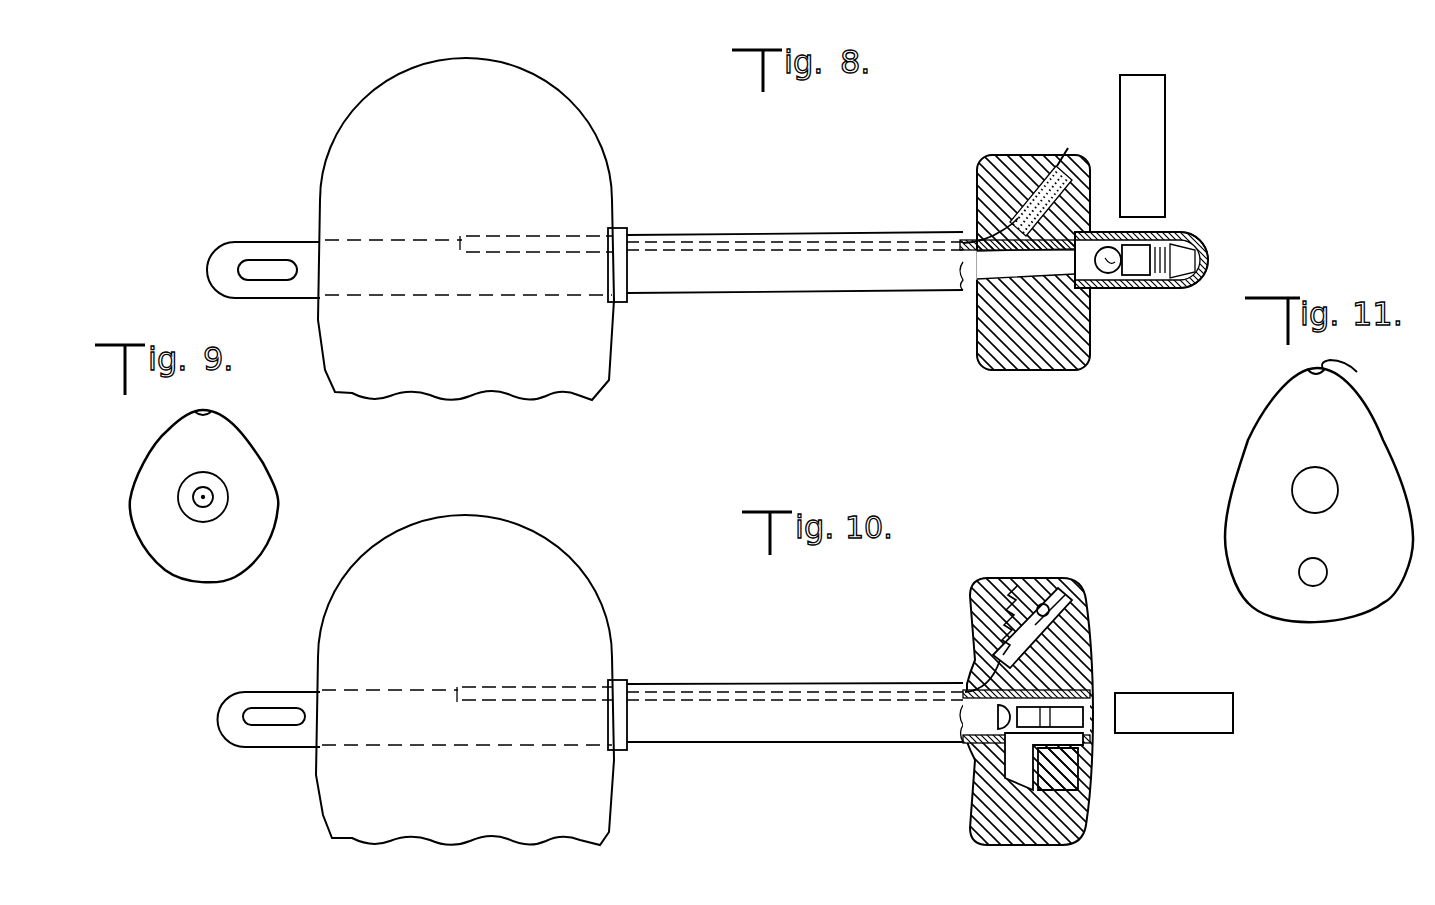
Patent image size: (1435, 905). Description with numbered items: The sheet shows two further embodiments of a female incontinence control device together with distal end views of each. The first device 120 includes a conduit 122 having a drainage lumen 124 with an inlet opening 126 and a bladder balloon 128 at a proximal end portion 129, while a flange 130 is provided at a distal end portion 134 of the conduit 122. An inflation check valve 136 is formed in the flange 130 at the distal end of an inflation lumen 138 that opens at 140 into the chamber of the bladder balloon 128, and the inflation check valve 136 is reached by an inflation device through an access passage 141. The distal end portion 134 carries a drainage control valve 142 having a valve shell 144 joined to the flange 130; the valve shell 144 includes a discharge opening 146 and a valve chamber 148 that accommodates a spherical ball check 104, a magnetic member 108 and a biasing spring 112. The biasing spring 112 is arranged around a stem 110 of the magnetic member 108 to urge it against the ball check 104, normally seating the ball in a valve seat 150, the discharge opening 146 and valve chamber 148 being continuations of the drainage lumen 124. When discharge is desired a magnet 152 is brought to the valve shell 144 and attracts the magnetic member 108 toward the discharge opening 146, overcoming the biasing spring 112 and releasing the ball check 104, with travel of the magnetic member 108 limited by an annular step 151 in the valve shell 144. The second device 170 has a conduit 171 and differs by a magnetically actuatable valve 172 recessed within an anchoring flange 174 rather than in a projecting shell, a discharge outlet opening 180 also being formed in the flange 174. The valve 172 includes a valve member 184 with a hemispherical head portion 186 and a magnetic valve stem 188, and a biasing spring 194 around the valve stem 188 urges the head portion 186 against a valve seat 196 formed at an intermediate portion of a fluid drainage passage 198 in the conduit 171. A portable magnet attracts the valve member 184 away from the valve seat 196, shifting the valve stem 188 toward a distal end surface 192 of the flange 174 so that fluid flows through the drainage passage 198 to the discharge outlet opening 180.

In FIG. 8, the spherical ball check 104 is at (1082, 306).
In FIG. 8, the magnetic member 108 is at (1160, 240).
In FIG. 8, the stem 110 is at (1163, 245).
In FIG. 8, the biasing spring 112 is at (1200, 276).
In FIG. 8, the female incontinence control device 120 is at (783, 186).
In FIG. 9, the female incontinence control device 120 is at (287, 486).
In FIG. 8, the conduit 122 is at (785, 238).
In FIG. 8, the drainage lumen 124 is at (708, 248).
In FIG. 8, the inlet opening 126 is at (266, 262).
In FIG. 10, the inlet opening 126 is at (268, 727).
In FIG. 8, the bladder balloon 128 is at (372, 95).
In FIG. 10, the bladder balloon 128 is at (566, 550).
In FIG. 8, the proximal end portion 129 is at (205, 252).
In FIG. 8, the flange 130 is at (1008, 155).
In FIG. 9, the flange 130 is at (246, 436).
In FIG. 8, the distal end portion 134 is at (1078, 372).
In FIG. 8, the inflation check valve 136 is at (1038, 170).
In FIG. 10, the inflation check valve 136 is at (1070, 622).
In FIG. 8, the inflation lumen 138 is at (968, 233).
In FIG. 8, the opening of inflation lumen 140 is at (460, 243).
In FIG. 10, the opening of inflation lumen 140 is at (460, 690).
In FIG. 8, the access passage 141 is at (1062, 160).
In FIG. 9, the access passage 141 is at (210, 409).
In FIG. 11, the access passage 141 is at (1357, 370).
In FIG. 10, the access passage 141 is at (1052, 584).
In FIG. 8, the drainage control valve 142 is at (1112, 290).
In FIG. 9, the drainage control valve 142 is at (230, 498).
In FIG. 8, the valve shell 144 is at (1150, 292).
In FIG. 9, the valve shell 144 is at (224, 513).
In FIG. 8, the discharge opening 146 is at (1202, 262).
In FIG. 9, the discharge opening 146 is at (198, 503).
In FIG. 8, the valve chamber 148 is at (1135, 292).
In FIG. 8, the valve seat 150 is at (1100, 240).
In FIG. 8, the annular step 151 is at (1165, 290).
In FIG. 8, the magnet 152 is at (1165, 117).
In FIG. 11, the female incontinence control device 170 is at (1243, 436).
In FIG. 10, the female incontinence control device 170 is at (790, 660).
In FIG. 10, the conduit 171 is at (840, 684).
In FIG. 10, the magnetically actuatable valve 172 is at (1090, 786).
In FIG. 11, the anchoring flange 174 is at (1380, 435).
In FIG. 10, the anchoring flange 174 is at (1004, 578).
In FIG. 11, the discharge outlet opening 180 is at (1308, 578).
In FIG. 10, the discharge outlet opening 180 is at (1086, 812).
In FIG. 10, the valve member 184 is at (1062, 700).
In FIG. 10, the hemispherical head portion 186 is at (1002, 720).
In FIG. 10, the magnetic valve stem 188 is at (1085, 700).
In FIG. 11, the distal end surface 192 is at (1292, 494).
In FIG. 10, the distal end surface 192 is at (1092, 746).
In FIG. 10, the biasing spring 194 is at (1048, 698).
In FIG. 10, the valve seat 196 is at (992, 745).
In FIG. 10, the fluid drainage passage 198 is at (968, 690).